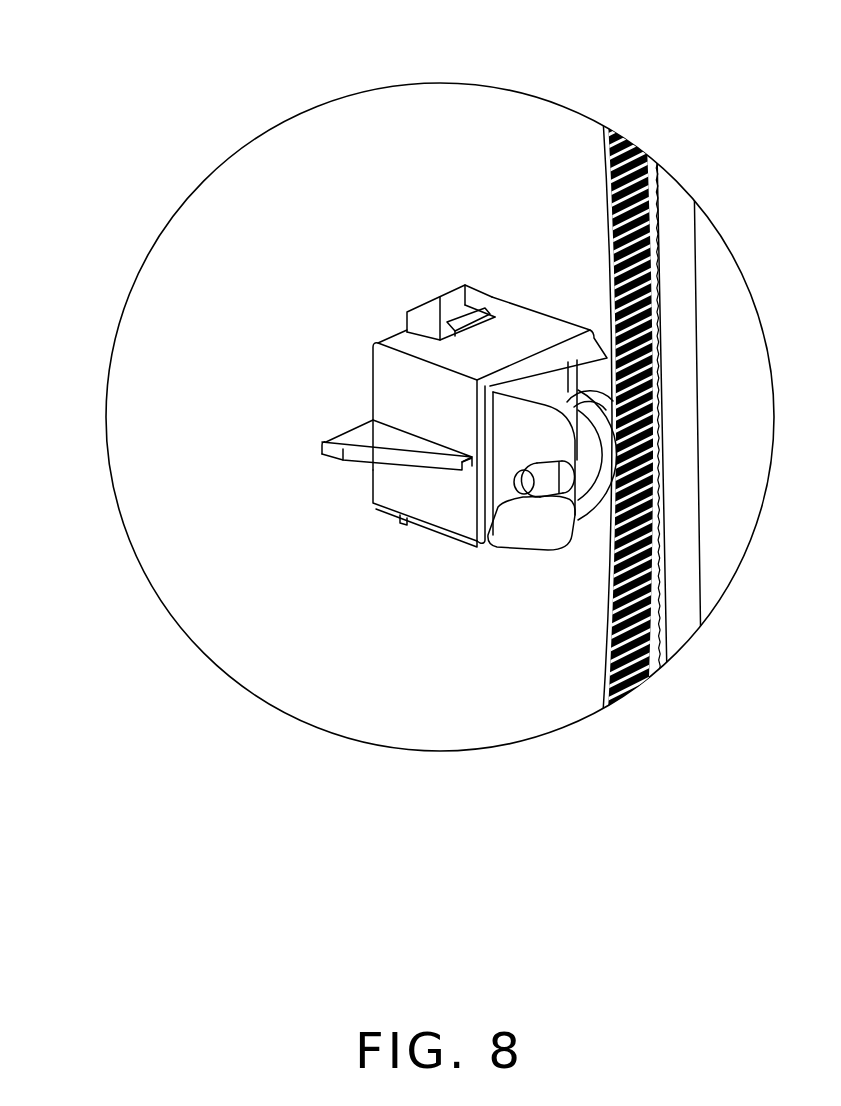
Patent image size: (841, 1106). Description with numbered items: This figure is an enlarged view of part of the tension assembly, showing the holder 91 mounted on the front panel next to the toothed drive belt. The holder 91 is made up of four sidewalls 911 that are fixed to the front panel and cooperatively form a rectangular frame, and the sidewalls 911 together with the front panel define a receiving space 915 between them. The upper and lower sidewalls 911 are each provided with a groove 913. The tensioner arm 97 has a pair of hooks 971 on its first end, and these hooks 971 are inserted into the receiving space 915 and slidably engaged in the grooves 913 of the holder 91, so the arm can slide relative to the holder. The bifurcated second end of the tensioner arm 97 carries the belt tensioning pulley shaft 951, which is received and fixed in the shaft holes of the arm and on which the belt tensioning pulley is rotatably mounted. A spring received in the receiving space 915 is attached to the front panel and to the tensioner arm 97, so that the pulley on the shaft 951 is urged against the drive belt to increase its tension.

The holder 91 is at (380, 386).
The sidewall 911 is at (413, 418).
The groove 913 is at (437, 322).
The receiving space 915 is at (507, 533).
The belt tensioning pulley shaft 951 is at (520, 481).
The tensioner arm 97 is at (537, 532).
The hook 971 is at (468, 323).